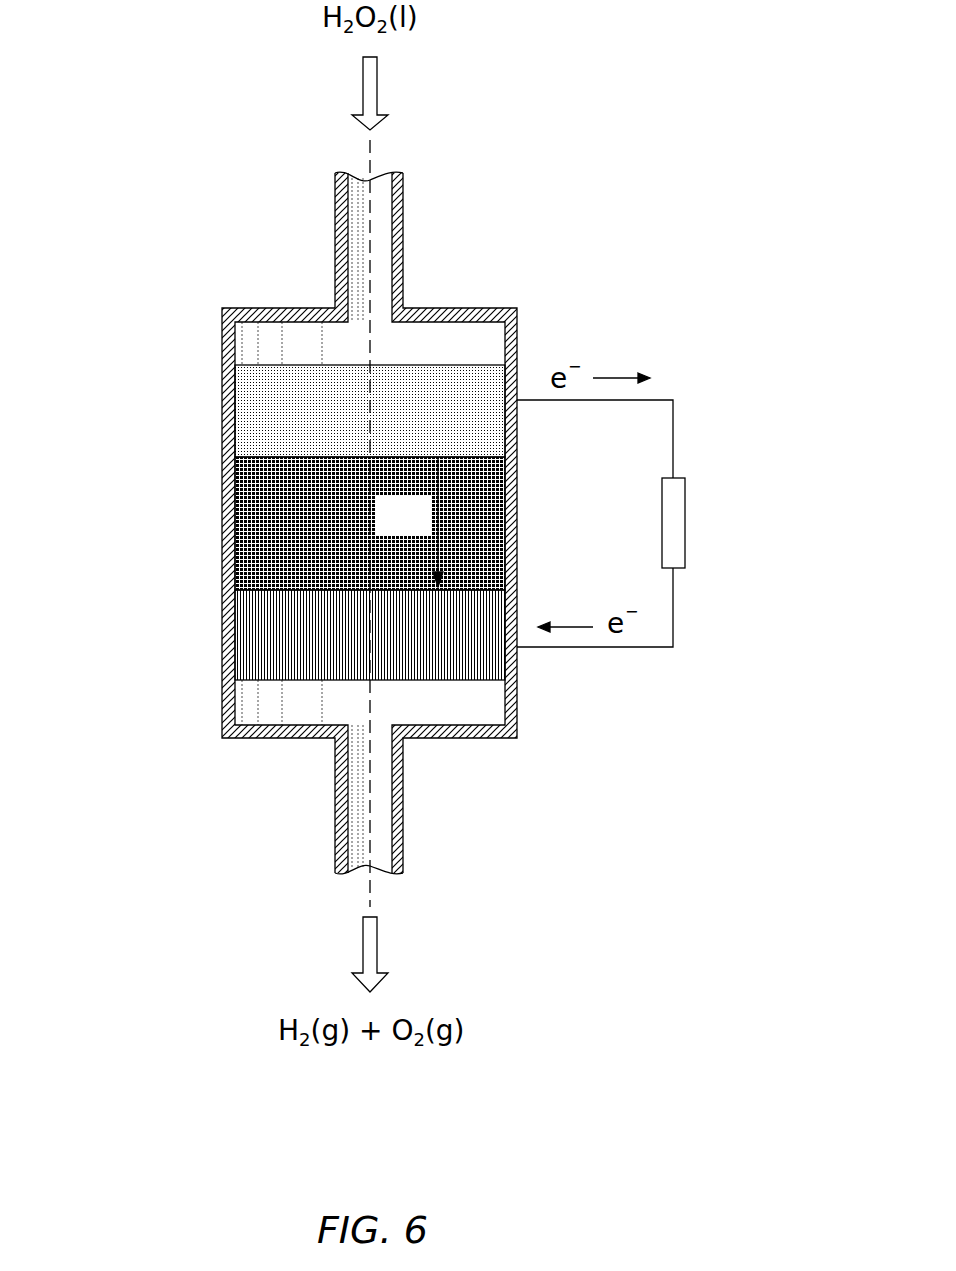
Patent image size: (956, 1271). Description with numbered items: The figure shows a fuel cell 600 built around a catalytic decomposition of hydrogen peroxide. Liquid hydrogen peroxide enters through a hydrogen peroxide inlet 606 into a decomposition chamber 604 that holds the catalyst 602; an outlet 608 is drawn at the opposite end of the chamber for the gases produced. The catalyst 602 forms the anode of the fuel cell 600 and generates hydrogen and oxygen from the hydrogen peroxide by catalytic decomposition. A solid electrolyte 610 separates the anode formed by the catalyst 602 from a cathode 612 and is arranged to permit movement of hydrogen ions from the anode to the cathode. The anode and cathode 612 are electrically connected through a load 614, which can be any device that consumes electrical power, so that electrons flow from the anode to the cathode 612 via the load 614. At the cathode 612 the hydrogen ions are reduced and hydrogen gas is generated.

The fuel cell 600 is at (606, 270).
The catalyst 602 is at (235, 410).
The decomposition chamber 604 is at (222, 518).
The hydrogen peroxide inlet 606 is at (335, 275).
The outlet conduit 608 is at (335, 796).
The solid electrolyte 610 is at (517, 517).
The cathode 612 is at (235, 632).
The load 614 is at (685, 518).